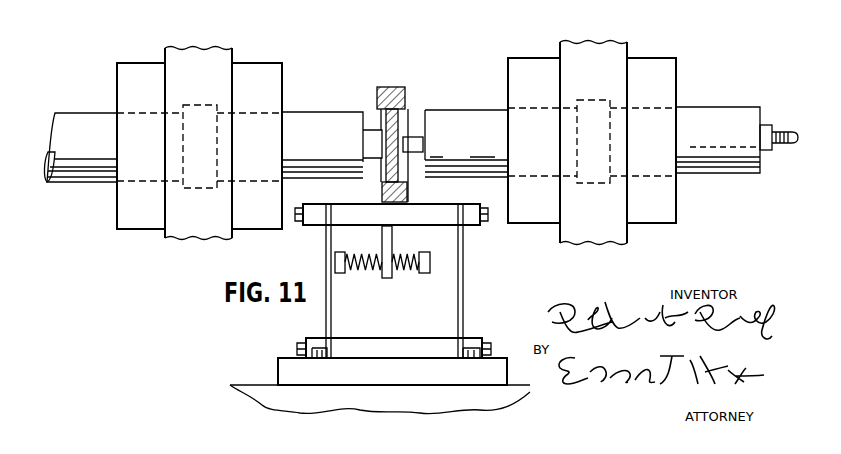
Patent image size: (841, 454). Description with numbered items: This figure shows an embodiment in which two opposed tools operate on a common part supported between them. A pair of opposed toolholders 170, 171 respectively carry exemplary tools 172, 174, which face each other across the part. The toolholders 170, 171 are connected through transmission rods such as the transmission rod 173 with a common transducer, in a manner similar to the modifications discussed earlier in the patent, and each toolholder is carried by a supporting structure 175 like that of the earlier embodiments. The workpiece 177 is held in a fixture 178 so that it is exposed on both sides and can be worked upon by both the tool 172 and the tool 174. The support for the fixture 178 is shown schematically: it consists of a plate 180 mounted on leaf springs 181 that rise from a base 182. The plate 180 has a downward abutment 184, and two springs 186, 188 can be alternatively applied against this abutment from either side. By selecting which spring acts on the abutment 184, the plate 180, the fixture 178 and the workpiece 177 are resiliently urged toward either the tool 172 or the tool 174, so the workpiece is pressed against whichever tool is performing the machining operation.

The toolholder 170 is at (325, 125).
The toolholder 171 is at (465, 115).
The tool 172 is at (370, 144).
The transmission rod 173 is at (785, 130).
The tool 174 is at (413, 137).
The supporting structure 175 is at (173, 53).
The workpiece 177 is at (462, 157).
The fixture 178 is at (380, 190).
The plate 180 is at (432, 218).
The leaf springs 181 is at (327, 250).
The base 182 is at (407, 384).
The downward abutment 184 is at (382, 240).
The spring 186 is at (363, 267).
The spring 188 is at (403, 256).